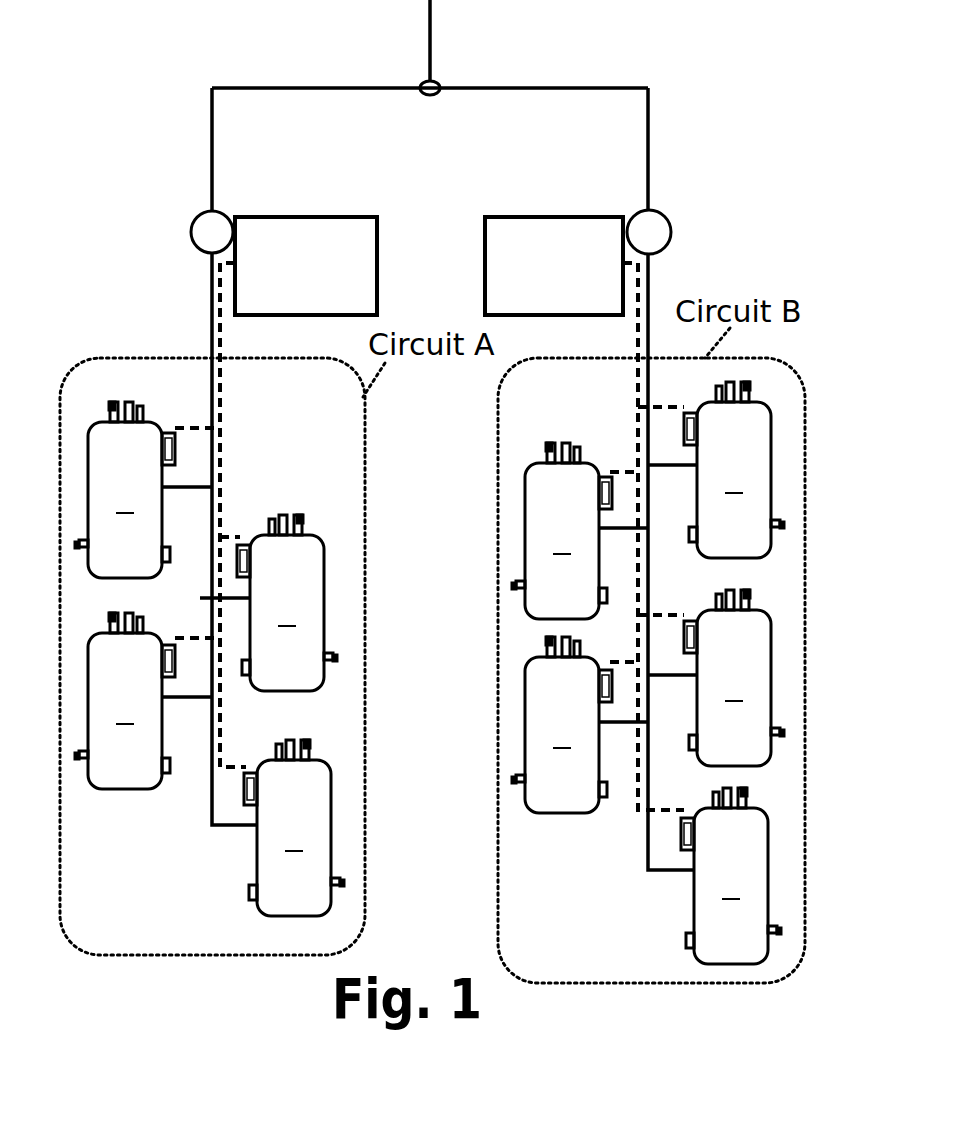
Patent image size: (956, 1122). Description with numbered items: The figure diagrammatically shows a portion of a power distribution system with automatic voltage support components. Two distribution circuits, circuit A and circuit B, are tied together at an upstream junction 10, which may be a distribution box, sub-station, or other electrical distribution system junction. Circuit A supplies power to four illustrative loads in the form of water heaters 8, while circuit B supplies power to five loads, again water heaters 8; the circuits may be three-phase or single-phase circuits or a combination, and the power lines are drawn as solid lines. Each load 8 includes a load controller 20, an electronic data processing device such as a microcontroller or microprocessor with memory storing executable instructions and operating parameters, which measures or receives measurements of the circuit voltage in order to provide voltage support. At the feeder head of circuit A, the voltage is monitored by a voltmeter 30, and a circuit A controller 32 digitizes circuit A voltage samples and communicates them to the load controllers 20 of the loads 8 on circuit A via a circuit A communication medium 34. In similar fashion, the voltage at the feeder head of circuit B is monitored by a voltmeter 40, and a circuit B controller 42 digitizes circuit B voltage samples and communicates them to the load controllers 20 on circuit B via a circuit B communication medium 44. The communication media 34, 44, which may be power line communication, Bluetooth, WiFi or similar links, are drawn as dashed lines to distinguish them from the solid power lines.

The upstream junction 10 is at (437, 82).
The water heater 8 is at (429, 673).
The load controller 20 is at (176, 450).
The voltmeter 30 is at (196, 216).
The circuit A controller 32 is at (287, 217).
The circuit A communication medium 34 is at (222, 391).
The voltmeter 40 is at (667, 214).
The circuit B controller 42 is at (528, 217).
The circuit B communication medium 44 is at (636, 391).